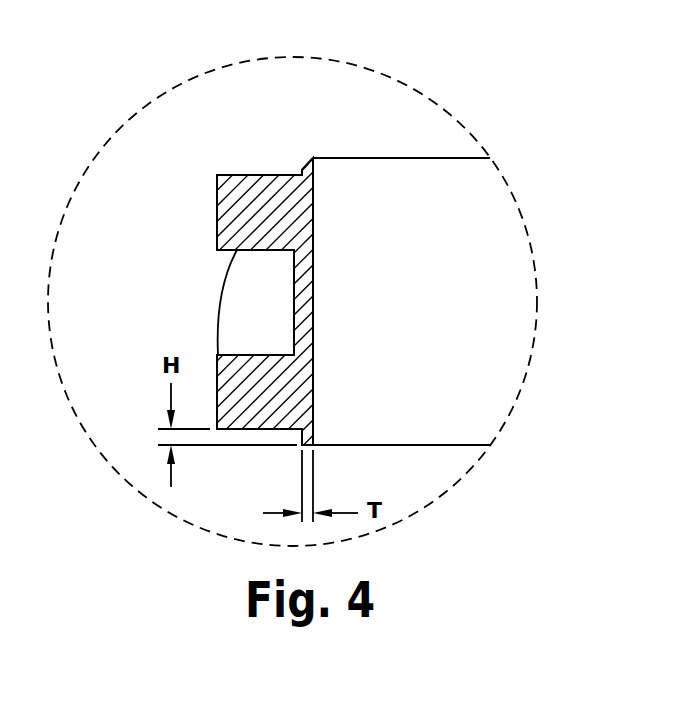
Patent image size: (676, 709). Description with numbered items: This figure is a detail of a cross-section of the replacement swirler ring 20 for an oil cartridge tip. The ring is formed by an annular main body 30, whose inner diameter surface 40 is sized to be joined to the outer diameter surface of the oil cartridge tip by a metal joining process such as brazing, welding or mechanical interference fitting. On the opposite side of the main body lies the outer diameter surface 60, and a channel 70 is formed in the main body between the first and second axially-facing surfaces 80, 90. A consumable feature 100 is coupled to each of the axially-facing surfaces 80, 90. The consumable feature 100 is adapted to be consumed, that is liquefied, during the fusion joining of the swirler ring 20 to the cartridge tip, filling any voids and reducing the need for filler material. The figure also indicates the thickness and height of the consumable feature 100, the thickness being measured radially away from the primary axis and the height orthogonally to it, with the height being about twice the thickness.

The replacement swirler ring 20 is at (530, 365).
The annular main body 30 is at (438, 197).
The inner diameter surface 40 is at (470, 318).
The outer diameter surface 60 is at (216, 221).
The channel 70 is at (247, 312).
The first axially-facing surface 80 is at (257, 175).
The second axially-facing surface 90 is at (277, 430).
The consumable feature 100 is at (303, 158).